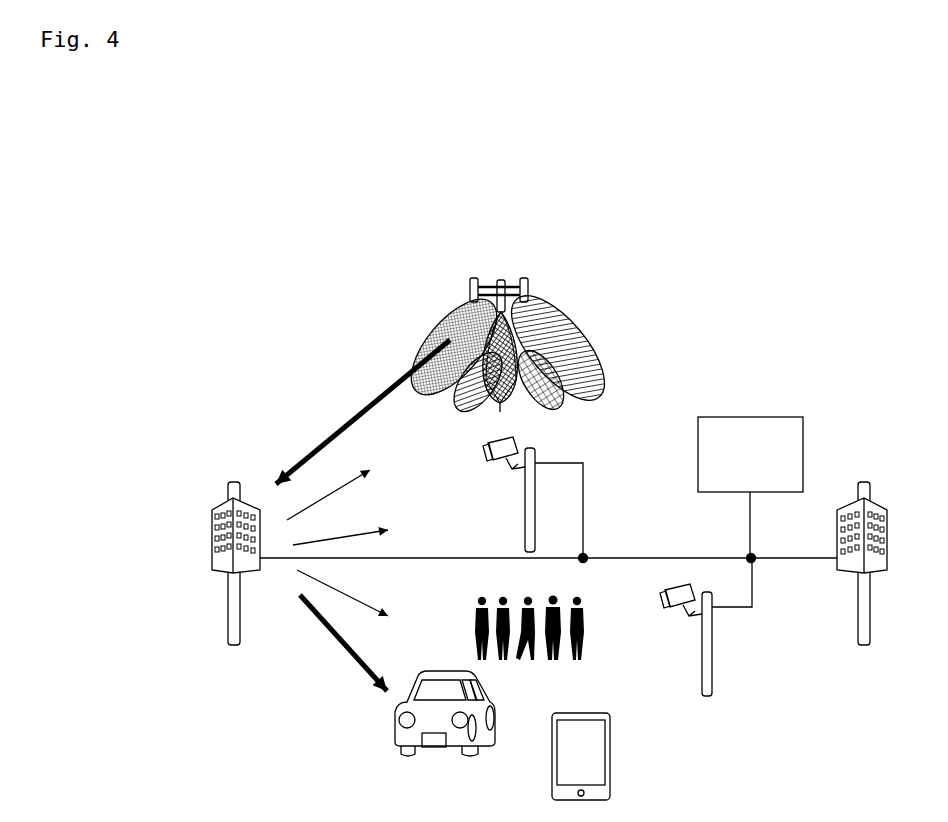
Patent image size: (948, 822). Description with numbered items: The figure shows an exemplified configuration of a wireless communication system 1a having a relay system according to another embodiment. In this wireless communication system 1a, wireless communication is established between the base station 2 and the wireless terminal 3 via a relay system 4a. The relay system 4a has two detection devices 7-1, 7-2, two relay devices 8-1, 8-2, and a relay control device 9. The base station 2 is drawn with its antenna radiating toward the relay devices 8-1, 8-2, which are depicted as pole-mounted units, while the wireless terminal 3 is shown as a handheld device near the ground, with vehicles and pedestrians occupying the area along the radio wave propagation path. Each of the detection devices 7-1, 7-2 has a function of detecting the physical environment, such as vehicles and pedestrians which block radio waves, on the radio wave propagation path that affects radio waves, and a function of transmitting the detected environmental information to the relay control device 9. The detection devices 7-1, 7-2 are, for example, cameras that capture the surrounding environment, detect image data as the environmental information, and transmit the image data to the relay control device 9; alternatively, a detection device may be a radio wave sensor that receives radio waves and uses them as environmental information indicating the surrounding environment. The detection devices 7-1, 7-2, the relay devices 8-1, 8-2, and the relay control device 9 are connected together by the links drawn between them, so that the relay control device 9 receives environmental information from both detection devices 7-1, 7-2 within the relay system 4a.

The wireless communication system 1a is at (315, 323).
The base station 2 is at (530, 287).
The wireless terminal 3 is at (612, 762).
The relay system 4a is at (645, 431).
The detection device 7-1 is at (484, 449).
The detection device 7-2 is at (661, 595).
The relay device 8-1 is at (216, 507).
The relay device 8-2 is at (882, 508).
The relay control device 9 is at (757, 416).